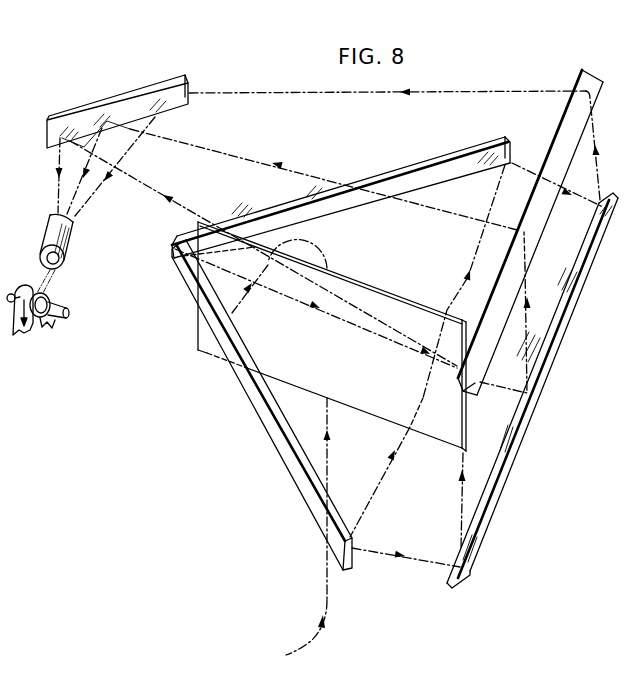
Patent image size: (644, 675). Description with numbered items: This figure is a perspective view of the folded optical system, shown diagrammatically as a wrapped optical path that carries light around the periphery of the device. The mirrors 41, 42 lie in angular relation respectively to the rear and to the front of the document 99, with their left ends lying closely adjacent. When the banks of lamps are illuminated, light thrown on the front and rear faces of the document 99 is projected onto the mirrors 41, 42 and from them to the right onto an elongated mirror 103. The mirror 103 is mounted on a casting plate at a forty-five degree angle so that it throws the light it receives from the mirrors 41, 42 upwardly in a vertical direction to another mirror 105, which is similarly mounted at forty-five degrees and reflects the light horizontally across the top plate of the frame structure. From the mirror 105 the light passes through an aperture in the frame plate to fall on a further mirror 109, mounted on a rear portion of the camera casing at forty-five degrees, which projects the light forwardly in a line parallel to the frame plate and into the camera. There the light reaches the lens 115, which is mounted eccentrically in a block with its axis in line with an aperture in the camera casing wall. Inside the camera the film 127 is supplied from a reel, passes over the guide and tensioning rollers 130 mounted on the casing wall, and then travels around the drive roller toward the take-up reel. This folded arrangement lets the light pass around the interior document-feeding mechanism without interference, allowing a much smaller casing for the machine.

The mirror 41 is at (403, 171).
The mirror 42 is at (288, 463).
The document 99 is at (372, 296).
The elongated mirror 103 is at (508, 450).
The mirror 105 is at (561, 123).
The mirror 109 is at (117, 100).
The lens 115 is at (74, 256).
The film 127 is at (31, 334).
The guide and tensioning rollers 130 is at (50, 302).